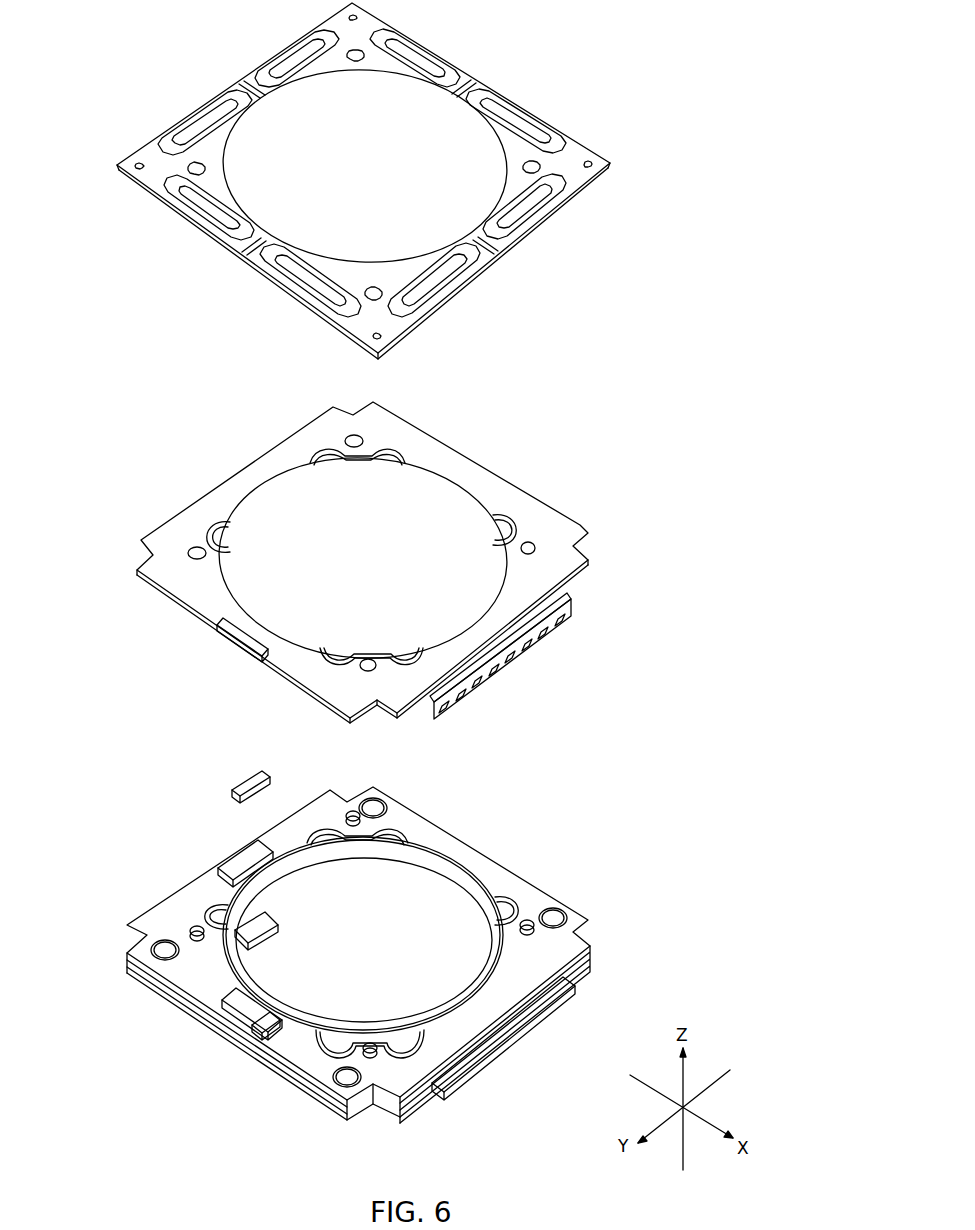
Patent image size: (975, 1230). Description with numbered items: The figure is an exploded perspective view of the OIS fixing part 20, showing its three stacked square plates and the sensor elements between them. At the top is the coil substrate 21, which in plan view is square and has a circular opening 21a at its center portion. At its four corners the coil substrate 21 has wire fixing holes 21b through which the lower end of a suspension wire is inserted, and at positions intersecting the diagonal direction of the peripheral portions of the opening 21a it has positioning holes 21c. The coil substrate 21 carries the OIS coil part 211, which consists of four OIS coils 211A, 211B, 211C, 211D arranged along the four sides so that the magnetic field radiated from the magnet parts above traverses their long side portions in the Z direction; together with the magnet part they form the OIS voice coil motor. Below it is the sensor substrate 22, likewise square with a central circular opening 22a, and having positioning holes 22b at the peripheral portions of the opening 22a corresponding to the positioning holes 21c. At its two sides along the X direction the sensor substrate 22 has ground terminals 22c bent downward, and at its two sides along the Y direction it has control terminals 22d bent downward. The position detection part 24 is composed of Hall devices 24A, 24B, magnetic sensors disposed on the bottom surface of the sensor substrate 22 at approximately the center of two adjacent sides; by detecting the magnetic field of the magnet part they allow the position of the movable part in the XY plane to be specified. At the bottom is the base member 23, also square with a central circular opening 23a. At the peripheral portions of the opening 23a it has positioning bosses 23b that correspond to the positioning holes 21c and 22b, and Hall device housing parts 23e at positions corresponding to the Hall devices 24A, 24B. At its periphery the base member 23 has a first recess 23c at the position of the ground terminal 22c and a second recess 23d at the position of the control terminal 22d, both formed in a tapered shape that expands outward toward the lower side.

The OIS fixing part 20 is at (703, 288).
The coil substrate 21 is at (577, 105).
The circular opening 21a is at (452, 97).
The wire fixing holes 21b is at (117, 164).
The positioning holes 21c is at (540, 158).
The OIS coil part 211 is at (344, 164).
The OIS coil 211A is at (227, 248).
The OIS coil 211B is at (470, 268).
The OIS coil 211C is at (413, 47).
The OIS coil 211D is at (267, 71).
The sensor substrate 22 is at (578, 499).
The circular opening 22a is at (460, 487).
The positioning holes 22b is at (532, 548).
The ground terminals 22c is at (237, 656).
The control terminals 22d is at (527, 650).
The base member 23 is at (573, 870).
The circular opening 23a is at (470, 880).
The positioning bosses 23b is at (545, 924).
The first recess 23c is at (240, 1038).
The second recess 23d is at (527, 1020).
The Hall device housing parts 23e is at (240, 868).
The position detection part 24 is at (253, 861).
The Hall device 24A is at (228, 795).
The Hall device 24B is at (285, 936).